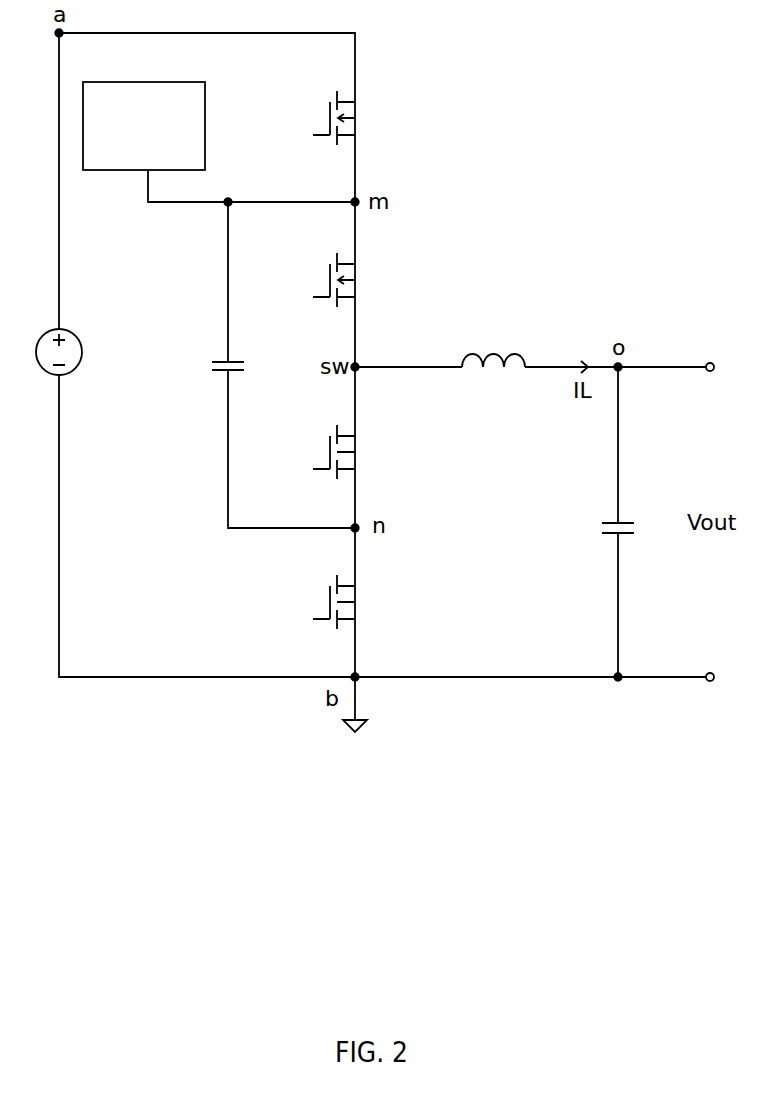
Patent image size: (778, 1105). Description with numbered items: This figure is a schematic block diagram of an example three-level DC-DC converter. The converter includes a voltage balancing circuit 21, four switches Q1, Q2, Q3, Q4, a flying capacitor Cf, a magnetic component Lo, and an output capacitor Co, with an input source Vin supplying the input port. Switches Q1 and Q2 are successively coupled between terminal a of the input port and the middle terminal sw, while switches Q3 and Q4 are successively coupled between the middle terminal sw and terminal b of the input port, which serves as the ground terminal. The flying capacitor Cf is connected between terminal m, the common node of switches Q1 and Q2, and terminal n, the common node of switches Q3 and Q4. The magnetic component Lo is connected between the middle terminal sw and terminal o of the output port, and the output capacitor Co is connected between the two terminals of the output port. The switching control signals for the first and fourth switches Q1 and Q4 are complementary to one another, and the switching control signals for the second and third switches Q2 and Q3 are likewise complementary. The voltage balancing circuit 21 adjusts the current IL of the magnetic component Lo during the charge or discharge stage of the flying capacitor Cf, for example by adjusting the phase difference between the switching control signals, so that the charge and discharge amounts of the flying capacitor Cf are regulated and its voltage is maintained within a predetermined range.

The voltage balancing circuit 21 is at (206, 103).
The switch Q1 is at (334, 118).
The switch Q2 is at (333, 280).
The switch Q3 is at (334, 452).
The switch Q4 is at (334, 602).
The flying capacitor Cf is at (267, 365).
The magnetic component Lo is at (493, 343).
The output capacitor Co is at (600, 522).
The input voltage source Vin is at (80, 352).